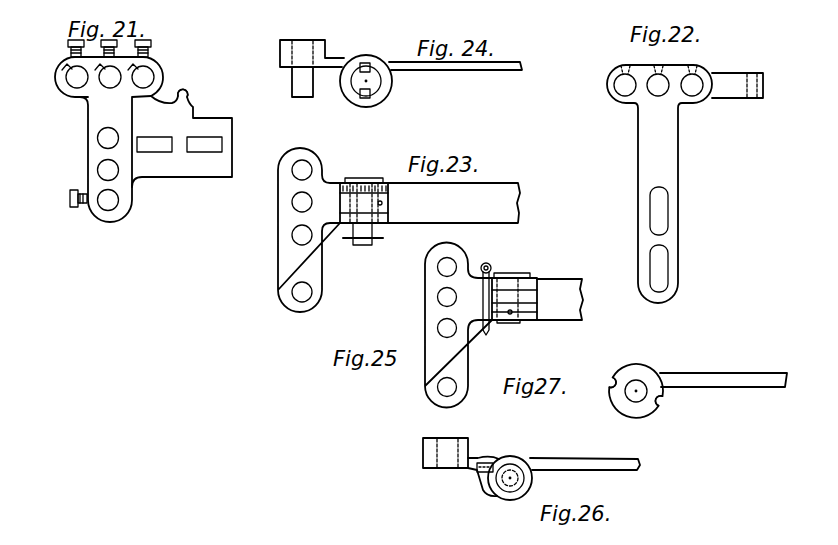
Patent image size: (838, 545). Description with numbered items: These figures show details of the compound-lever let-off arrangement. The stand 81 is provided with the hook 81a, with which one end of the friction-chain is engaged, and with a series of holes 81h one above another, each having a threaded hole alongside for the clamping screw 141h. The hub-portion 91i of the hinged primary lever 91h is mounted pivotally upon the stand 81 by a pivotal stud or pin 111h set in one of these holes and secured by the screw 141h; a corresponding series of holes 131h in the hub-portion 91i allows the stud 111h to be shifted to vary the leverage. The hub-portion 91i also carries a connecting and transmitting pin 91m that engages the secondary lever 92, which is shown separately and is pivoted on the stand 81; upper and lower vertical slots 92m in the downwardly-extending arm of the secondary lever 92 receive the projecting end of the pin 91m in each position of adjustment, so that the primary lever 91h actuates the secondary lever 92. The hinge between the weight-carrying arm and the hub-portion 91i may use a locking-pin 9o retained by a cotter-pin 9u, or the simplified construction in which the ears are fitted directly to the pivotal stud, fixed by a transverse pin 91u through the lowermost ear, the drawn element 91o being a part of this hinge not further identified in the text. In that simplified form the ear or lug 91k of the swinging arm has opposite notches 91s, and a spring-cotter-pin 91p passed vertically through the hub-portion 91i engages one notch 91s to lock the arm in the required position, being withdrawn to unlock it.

In FIG. 21, the stand 81 is at (93, 110).
In FIG. 21, the hook 81a is at (182, 96).
In FIG. 21, the holes 81h is at (99, 141).
In FIG. 21, the pivotal stud or pin 111h is at (115, 209).
In FIG. 21, the clamping screw 141h is at (70, 202).
In FIG. 24, the hub-portion 91i is at (327, 58).
In FIG. 23, the hub-portion 91i is at (278, 262).
In FIG. 25, the hub-portion 91i is at (425, 305).
In FIG. 26, the hub-portion 91i is at (423, 462).
In FIG. 24, the connecting and transmitting pin 91m is at (303, 98).
In FIG. 23, the connecting and transmitting pin 91m is at (295, 303).
In FIG. 24, the collar 91o is at (366, 81).
In FIG. 25, the collar 91o is at (507, 273).
In FIG. 26, the collar 91o is at (500, 489).
In FIG. 24, the primary lever 91h is at (477, 70).
In FIG. 23, the primary lever 91h is at (520, 200).
In FIG. 25, the primary lever 91h is at (562, 282).
In FIG. 27, the primary lever 91h is at (750, 375).
In FIG. 26, the primary lever 91h is at (597, 447).
In FIG. 22, the secondary lever 92 is at (668, 140).
In FIG. 22, the vertical slots 92m is at (662, 217).
In FIG. 23, the holes 131h is at (292, 202).
In FIG. 23, the locking-pin 9o is at (367, 242).
In FIG. 23, the cotter-pin 9u is at (386, 238).
In FIG. 25, the pin 91p is at (485, 259).
In FIG. 26, the pin 91p is at (483, 463).
In FIG. 25, the transverse pin 91u is at (510, 316).
In FIG. 27, the notches 91s is at (613, 377).
In FIG. 27, the ear or lug 91k is at (637, 418).